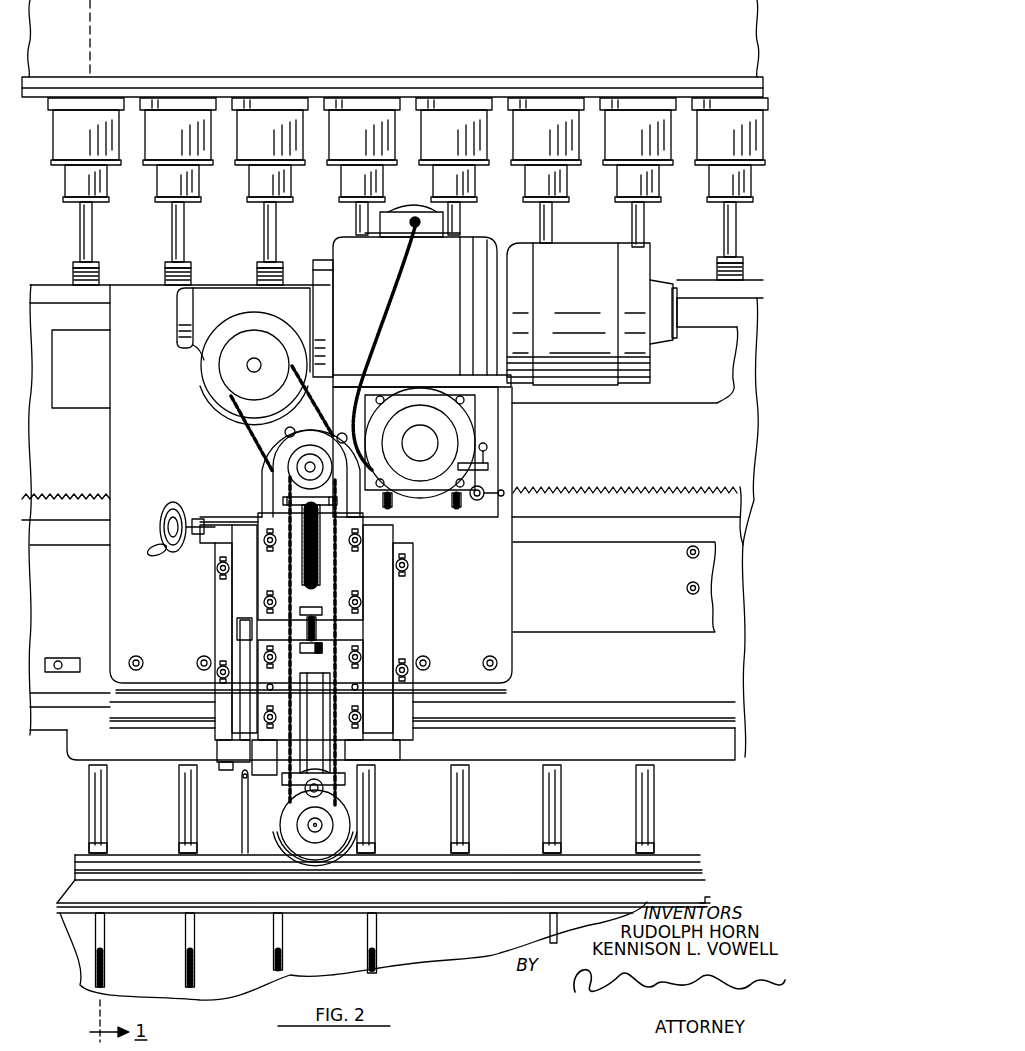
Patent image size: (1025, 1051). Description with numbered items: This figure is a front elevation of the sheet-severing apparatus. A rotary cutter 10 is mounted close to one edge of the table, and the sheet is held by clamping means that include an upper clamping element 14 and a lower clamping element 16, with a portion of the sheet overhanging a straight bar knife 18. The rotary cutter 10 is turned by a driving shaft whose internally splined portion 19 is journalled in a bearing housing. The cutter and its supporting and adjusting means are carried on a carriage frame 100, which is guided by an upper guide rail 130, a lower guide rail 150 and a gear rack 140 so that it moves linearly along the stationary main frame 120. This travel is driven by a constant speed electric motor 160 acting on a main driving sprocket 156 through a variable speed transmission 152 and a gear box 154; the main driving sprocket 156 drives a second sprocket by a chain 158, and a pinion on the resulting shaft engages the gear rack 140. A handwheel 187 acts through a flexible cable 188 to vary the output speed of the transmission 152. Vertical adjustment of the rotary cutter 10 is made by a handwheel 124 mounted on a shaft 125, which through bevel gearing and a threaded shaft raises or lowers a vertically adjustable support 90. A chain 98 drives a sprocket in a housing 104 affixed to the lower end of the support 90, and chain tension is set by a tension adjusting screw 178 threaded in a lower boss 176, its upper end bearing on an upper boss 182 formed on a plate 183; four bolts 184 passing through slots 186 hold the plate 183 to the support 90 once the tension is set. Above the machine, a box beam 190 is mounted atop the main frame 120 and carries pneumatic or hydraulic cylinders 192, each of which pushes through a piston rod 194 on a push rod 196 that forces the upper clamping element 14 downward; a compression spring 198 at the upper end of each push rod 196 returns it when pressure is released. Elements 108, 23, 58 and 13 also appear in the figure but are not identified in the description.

The box beam 190 is at (392, 48).
The pneumatic or hydraulic cylinders 192 is at (117, 152).
The piston rod 194 is at (95, 217).
The compression spring 198 is at (100, 275).
The gear box 154 is at (207, 288).
The main driving sprocket 156 is at (253, 327).
The variable speed transmission 152 is at (470, 235).
The constant speed electric motor 160 is at (522, 247).
The flexible cable 188 is at (400, 300).
The upper guide rail 130 is at (640, 407).
The carriage frame 100 is at (104, 361).
The chain 158 is at (263, 442).
The handwheel 187 is at (503, 488).
The gear rack 140 is at (565, 490).
The handwheel 124 is at (182, 507).
The shaft 125 is at (198, 534).
The plate 183 is at (255, 553).
The slots 186 is at (356, 585).
The bolts 184 is at (360, 601).
The vertically adjustable support 90 is at (243, 592).
The upper boss 182 is at (307, 607).
The tension adjusting screw 178 is at (306, 627).
The lower boss 176 is at (322, 648).
The rod 108 is at (247, 657).
The chain 98 is at (287, 650).
The lower guide rail 150 is at (620, 623).
The stationary main frame 120 is at (725, 608).
The base member 23 is at (687, 742).
The push rod 196 is at (180, 818).
The bracket 58 is at (326, 790).
The internally splined portion 19 is at (310, 825).
The upper clamping element 14 is at (390, 853).
The rotary cutter 10 is at (343, 861).
The housing 104 is at (305, 848).
The lower clamping element 16 is at (87, 897).
The straight bar knife 18 is at (705, 878).
The base 13 is at (226, 982).